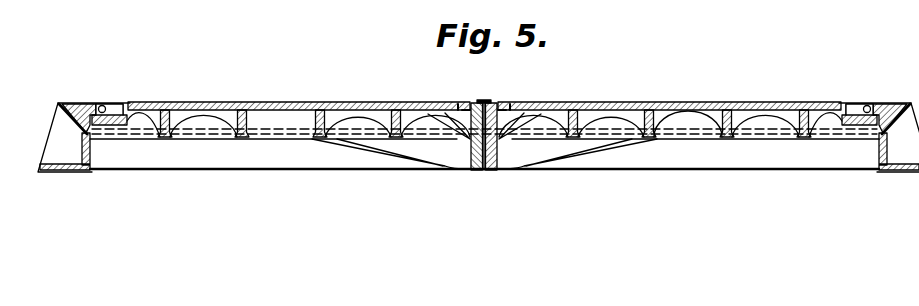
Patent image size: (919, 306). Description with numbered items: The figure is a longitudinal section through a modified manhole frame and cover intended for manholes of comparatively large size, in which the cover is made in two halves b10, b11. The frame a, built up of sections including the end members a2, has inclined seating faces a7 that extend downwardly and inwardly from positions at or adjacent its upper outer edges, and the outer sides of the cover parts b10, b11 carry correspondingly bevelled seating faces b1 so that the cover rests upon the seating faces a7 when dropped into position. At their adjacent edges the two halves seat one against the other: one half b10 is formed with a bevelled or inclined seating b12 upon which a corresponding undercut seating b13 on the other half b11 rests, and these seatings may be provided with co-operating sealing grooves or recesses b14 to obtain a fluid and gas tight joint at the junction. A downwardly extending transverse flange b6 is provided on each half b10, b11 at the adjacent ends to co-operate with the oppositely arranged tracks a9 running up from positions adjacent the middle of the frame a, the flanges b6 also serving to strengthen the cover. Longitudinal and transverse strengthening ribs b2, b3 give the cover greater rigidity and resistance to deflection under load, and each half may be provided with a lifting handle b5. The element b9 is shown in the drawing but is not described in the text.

The frame a is at (318, 158).
The end member a2 is at (878, 153).
The inclined seating face a7 is at (61, 112).
The track a9 is at (549, 160).
The inclined seating face of cover b1 is at (902, 103).
The longitudinal strengthening rib b2 is at (750, 127).
The transverse strengthening rib b3 is at (650, 135).
The lifting handle b5 is at (100, 105).
The transverse flange b6 is at (486, 136).
The socket boss b9 is at (478, 92).
The cover half b10 is at (305, 102).
The cover half b11 is at (632, 102).
The bevelled seating b12 is at (464, 105).
The undercut seating b13 is at (496, 105).
The sealing groove b14 is at (483, 101).